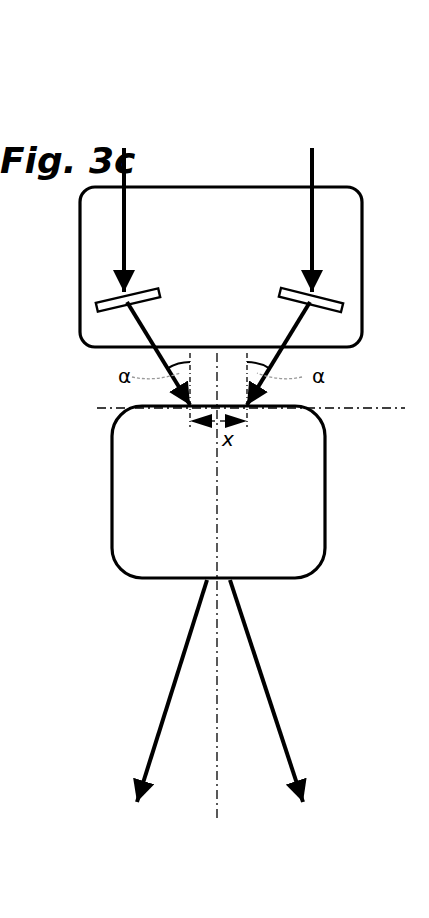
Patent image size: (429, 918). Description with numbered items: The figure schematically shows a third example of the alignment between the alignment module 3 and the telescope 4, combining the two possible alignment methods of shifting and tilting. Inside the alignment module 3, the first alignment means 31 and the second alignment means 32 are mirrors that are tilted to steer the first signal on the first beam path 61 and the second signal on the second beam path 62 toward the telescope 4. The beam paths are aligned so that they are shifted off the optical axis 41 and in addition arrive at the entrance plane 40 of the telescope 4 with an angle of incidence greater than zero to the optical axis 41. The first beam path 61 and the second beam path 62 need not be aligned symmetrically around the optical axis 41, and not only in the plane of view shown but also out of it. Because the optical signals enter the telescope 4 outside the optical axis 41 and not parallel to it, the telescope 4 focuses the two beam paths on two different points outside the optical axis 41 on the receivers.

The alignment module 3 is at (98, 227).
The first alignment means 31 is at (98, 306).
The second alignment means 32 is at (343, 307).
The first beam path 61 is at (125, 162).
The second beam path 62 is at (312, 162).
The telescope 4 is at (142, 538).
The entrance plane 40 is at (342, 408).
The optical axis 41 is at (218, 508).